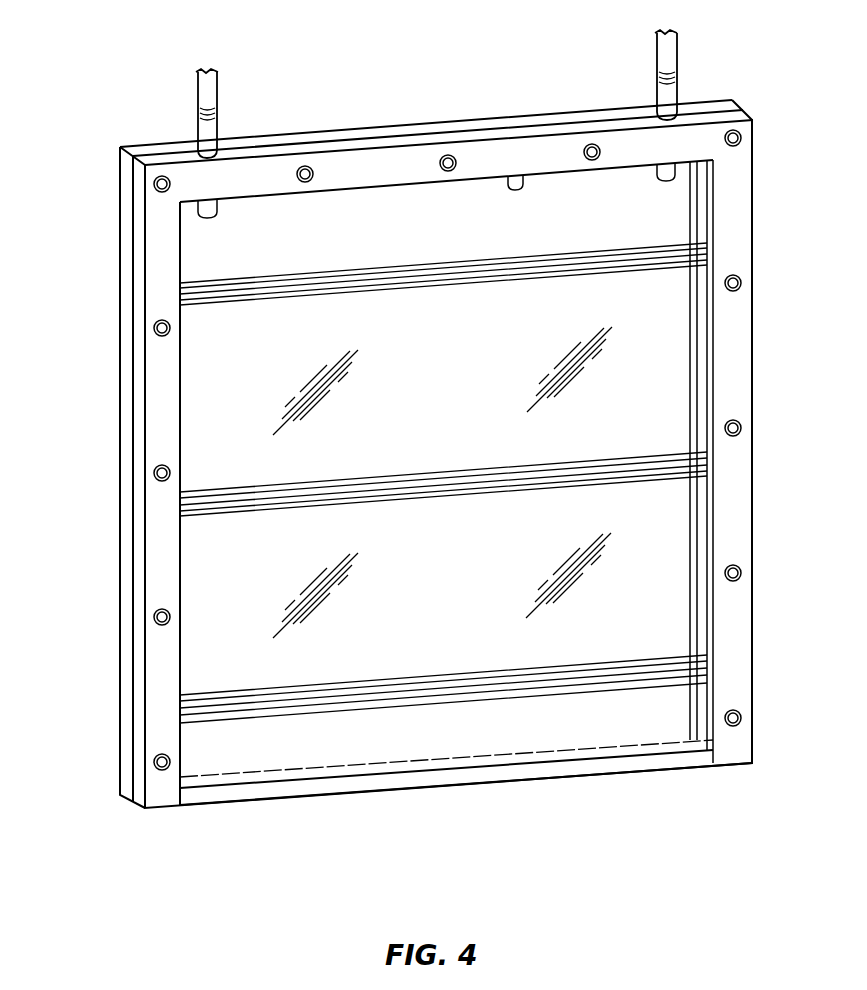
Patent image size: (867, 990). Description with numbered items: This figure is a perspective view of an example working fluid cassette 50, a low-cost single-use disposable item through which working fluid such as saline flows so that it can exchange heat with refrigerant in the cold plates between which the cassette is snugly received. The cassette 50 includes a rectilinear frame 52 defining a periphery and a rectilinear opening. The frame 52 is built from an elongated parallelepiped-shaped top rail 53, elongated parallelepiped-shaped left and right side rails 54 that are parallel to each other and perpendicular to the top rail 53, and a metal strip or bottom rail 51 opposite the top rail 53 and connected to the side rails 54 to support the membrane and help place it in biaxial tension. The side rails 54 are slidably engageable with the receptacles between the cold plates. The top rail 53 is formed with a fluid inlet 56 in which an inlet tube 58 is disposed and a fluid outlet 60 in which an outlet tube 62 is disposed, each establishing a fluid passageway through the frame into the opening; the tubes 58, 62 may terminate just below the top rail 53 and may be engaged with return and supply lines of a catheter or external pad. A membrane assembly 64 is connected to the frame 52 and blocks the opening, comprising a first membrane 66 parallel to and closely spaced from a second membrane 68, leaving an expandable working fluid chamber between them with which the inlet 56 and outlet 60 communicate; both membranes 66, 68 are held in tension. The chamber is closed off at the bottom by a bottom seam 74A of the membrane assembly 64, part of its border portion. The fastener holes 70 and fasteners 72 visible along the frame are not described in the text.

The working fluid cassette 50 is at (770, 362).
The bottom rail 51 is at (315, 795).
The frame 52 is at (517, 182).
The top rail 53 is at (386, 128).
The left and right side rails 54 is at (156, 403).
The fluid inlet 56 is at (200, 138).
The inlet tube 58 is at (220, 131).
The fluid outlet 60 is at (659, 102).
The outlet tube 62 is at (680, 98).
The membrane assembly 64 is at (479, 798).
The first membrane 66 is at (655, 518).
The second membrane 68 is at (663, 500).
The fastener hole 70 is at (740, 274).
The fastener 72 is at (742, 291).
The bottom seam 74A is at (573, 765).